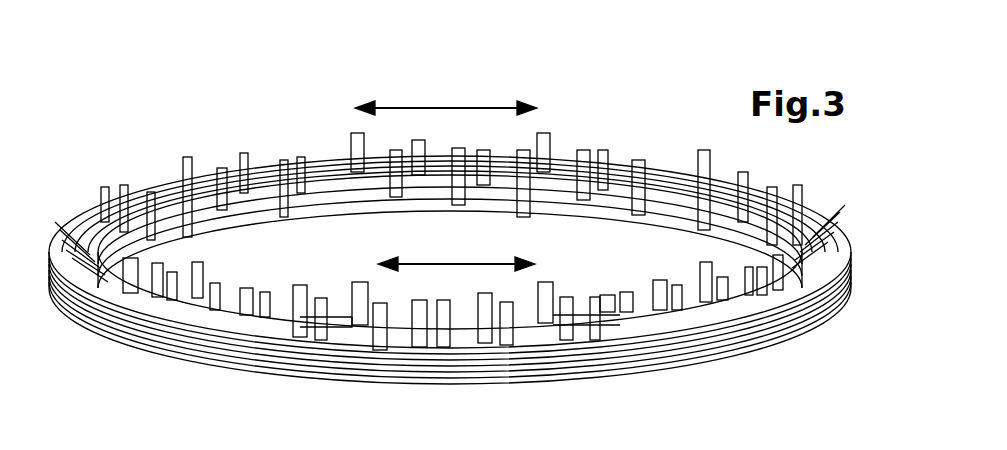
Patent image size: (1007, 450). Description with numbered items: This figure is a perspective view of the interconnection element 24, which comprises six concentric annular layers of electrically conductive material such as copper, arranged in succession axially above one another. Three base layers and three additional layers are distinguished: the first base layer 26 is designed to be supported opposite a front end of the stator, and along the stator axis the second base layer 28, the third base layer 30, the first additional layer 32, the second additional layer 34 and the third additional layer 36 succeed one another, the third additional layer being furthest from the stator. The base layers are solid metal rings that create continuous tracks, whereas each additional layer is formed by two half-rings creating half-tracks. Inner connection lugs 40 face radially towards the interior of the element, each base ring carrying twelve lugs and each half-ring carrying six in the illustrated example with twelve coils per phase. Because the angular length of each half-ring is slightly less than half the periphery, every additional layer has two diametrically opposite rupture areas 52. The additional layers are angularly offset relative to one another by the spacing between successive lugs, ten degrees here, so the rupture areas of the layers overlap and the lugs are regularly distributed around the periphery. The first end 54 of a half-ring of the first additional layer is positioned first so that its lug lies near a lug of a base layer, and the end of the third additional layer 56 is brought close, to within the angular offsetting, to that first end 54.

The interconnection element 24 is at (548, 90).
The first base layer 26 is at (104, 343).
The second base layer 28 is at (163, 360).
The third base layer 30 is at (240, 372).
The first additional layer 32 is at (443, 168).
The second additional layer 34 is at (375, 132).
The third additional layer 36 is at (567, 132).
The inner connection lugs 40 is at (197, 153).
The rupture areas 52 is at (455, 100).
The first end of a half-ring of the first additional layer 54 is at (395, 353).
The end of the third additional layer 56 is at (368, 345).